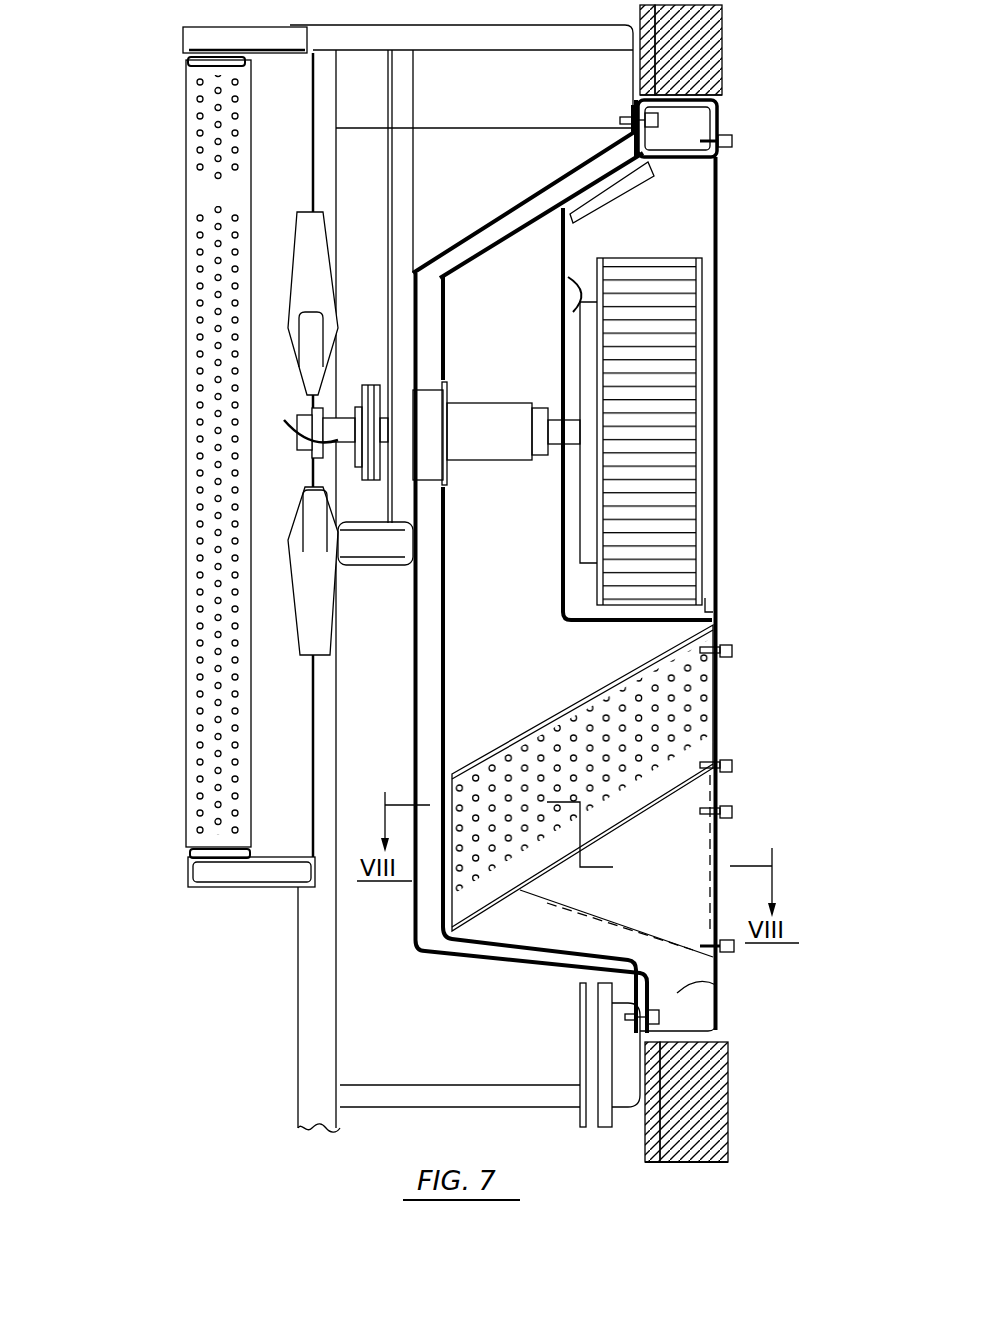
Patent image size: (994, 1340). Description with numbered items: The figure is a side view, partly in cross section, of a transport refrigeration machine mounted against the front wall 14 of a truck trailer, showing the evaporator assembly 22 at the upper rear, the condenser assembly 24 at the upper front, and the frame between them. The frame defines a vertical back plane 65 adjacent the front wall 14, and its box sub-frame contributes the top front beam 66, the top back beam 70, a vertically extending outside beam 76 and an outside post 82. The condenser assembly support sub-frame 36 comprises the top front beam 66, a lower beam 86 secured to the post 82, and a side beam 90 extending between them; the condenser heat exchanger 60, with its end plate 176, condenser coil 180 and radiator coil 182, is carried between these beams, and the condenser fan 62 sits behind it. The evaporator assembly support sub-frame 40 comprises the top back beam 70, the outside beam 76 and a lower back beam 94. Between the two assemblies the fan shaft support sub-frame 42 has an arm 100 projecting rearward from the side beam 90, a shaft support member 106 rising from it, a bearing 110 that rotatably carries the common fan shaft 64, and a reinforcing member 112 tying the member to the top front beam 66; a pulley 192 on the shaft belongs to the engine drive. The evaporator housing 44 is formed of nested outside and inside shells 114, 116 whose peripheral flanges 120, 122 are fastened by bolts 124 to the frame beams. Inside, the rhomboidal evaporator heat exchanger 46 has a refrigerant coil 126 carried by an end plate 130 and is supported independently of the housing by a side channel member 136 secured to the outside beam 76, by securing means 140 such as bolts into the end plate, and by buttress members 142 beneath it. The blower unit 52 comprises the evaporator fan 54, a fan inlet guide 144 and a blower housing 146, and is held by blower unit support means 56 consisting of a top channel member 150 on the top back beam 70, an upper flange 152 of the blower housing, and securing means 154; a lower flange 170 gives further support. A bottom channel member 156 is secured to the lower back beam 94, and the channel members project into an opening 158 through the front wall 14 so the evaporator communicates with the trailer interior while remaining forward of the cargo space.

The front wall 14 is at (645, 1157).
The evaporator assembly 22 is at (755, 190).
The condenser assembly 24 is at (160, 110).
The condenser assembly support sub-frame 36 is at (223, 905).
The evaporator assembly support sub-frame 40 is at (665, 1090).
The fan shaft support sub-frame 42 is at (365, 590).
The evaporator housing 44 is at (462, 222).
The evaporator heat exchanger 46 is at (527, 708).
The blower unit 52 is at (755, 300).
The evaporator fan 54 is at (672, 400).
The blower unit support means 56 is at (735, 92).
The condenser assembly heat exchanger 60 is at (160, 520).
The condenser fan 62 is at (288, 560).
The fan shaft 64 is at (338, 416).
The back plane 65 is at (645, 22).
The top front beam 66 is at (215, 35).
The top back beam 70 is at (688, 68).
The outside beam 76 is at (578, 1070).
The outside post 82 is at (297, 1030).
The lower beam 86 is at (226, 875).
The side beam 90 is at (284, 455).
The lower back beam 94 is at (637, 1057).
The arm 100 is at (360, 522).
The shaft support member 106 is at (413, 174).
The bearing 110 is at (428, 412).
The reinforcing member 112 is at (456, 28).
The outside shell 114 is at (432, 952).
The inside shell 116 is at (477, 942).
The peripheral flange 120 is at (580, 990).
The peripheral flange 122 is at (700, 955).
The bolts 124 is at (658, 122).
The refrigerant coil 126 is at (501, 760).
The end plate 130 is at (627, 672).
The side channel member 136 is at (722, 445).
The securing means 140 is at (733, 650).
The buttress members 142 is at (616, 866).
The fan inlet guide 144 is at (566, 304).
The blower housing 146 is at (557, 252).
The top channel member 150 is at (668, 98).
The upper flange 152 is at (722, 118).
The securing means 154 is at (734, 141).
The bottom channel member 156 is at (700, 1047).
The opening 158 is at (680, 992).
The lower flange 170 is at (718, 615).
The end plate 176 is at (205, 188).
The condenser coil 180 is at (190, 715).
The radiator coil 182 is at (182, 96).
The pulley 192 is at (368, 385).